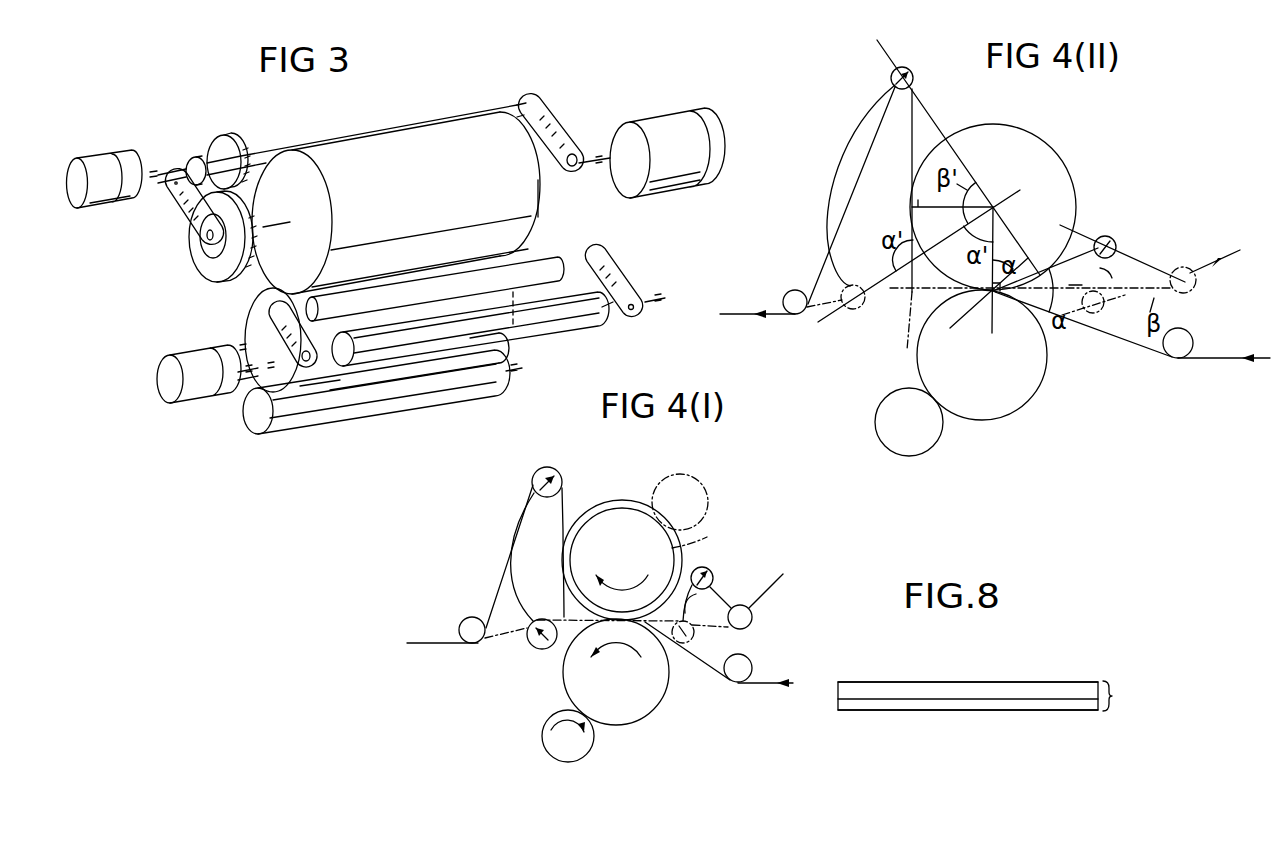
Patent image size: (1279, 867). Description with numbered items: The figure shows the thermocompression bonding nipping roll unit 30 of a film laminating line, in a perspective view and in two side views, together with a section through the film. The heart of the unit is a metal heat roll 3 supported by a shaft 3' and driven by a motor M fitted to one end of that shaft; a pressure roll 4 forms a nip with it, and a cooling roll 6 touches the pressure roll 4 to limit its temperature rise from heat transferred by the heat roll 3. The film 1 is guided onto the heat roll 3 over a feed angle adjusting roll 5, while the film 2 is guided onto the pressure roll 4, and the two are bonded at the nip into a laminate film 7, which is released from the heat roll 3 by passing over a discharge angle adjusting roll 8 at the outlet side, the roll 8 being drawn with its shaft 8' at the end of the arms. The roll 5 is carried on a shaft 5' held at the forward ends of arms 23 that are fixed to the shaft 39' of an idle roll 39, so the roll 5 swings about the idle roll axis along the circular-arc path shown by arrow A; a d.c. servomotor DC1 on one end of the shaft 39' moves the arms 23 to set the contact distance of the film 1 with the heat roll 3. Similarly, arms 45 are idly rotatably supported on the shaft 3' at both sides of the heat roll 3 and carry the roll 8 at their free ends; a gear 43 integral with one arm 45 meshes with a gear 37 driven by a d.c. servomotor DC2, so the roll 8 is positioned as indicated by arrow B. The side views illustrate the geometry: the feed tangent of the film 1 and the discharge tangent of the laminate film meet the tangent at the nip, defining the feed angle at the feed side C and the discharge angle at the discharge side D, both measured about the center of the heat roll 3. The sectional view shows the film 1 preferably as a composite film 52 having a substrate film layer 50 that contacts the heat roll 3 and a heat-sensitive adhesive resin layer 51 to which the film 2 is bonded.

In FIG. 4II, the film 1 is at (1144, 257).
In FIG. 4I, the film 1 is at (773, 587).
In FIG. 8, the film 1 is at (952, 712).
In FIG. 4II, the film 2 is at (1190, 361).
In FIG. 4I, the film 2 is at (763, 686).
In FIG. 3, the heat roll 3 is at (396, 191).
In FIG. 4II, the heat roll 3 is at (993, 221).
In FIG. 4I, the heat roll 3 is at (622, 533).
In FIG. 3, the shaft 3' is at (280, 242).
In FIG. 4II, the shaft 3' is at (929, 181).
In FIG. 3, the pressure roll 4 is at (252, 318).
In FIG. 4II, the pressure roll 4 is at (1017, 413).
In FIG. 4I, the pressure roll 4 is at (654, 710).
In FIG. 3, the feed angle adjusting roll 5 is at (472, 320).
In FIG. 4II, the feed angle adjusting roll 5 is at (1112, 227).
In FIG. 4I, the feed angle adjusting roll 5 is at (716, 595).
In FIG. 3, the shaft 5' is at (441, 274).
In FIG. 4II, the shaft 5' is at (1093, 256).
In FIG. 3, the cooling roll 6 is at (403, 398).
In FIG. 4II, the cooling roll 6 is at (909, 422).
In FIG. 4I, the cooling roll 6 is at (583, 746).
In FIG. 4II, the laminate film 7 is at (911, 186).
In FIG. 4I, the laminate film 7 is at (567, 508).
In FIG. 3, the discharge angle adjusting roll 8 is at (362, 140).
In FIG. 4II, the discharge angle adjusting roll 8 is at (862, 166).
In FIG. 4I, the discharge angle adjusting roll 8 is at (536, 530).
In FIG. 3, the guide roller shaft 8' is at (529, 92).
In FIG. 4II, the guide roller shaft 8' is at (937, 65).
In FIG. 3, the arms 23 is at (300, 388).
In FIG. 3, the thermocompression bonding nipping roll unit 30 is at (546, 218).
In FIG. 3, the gear 37 is at (217, 138).
In FIG. 4I, the gear 37 is at (710, 496).
In FIG. 3, the idle roll 39 is at (446, 365).
In FIG. 4I, the idle roll 39 is at (760, 627).
In FIG. 3, the shaft 39' is at (340, 416).
In FIG. 4II, the shaft 39' is at (1191, 253).
In FIG. 3, the gear 43 is at (202, 273).
In FIG. 4I, the gear 43 is at (707, 539).
In FIG. 3, the arms 45 is at (172, 197).
In FIG. 8, the substrate film layer 50 is at (1045, 682).
In FIG. 8, the heat-sensitive adhesive resin layer 51 is at (1042, 705).
In FIG. 8, the composite film 52 is at (1116, 696).
In FIG. 3, the d.c. servomotor DC1 is at (187, 398).
In FIG. 3, the d.c. servomotor DC2 is at (118, 200).
In FIG. 3, the motor M is at (673, 115).
In FIG. 4II, the arrow A is at (1115, 279).
In FIG. 4I, the arrow A is at (699, 609).
In FIG. 4II, the arrow B is at (827, 212).
In FIG. 4I, the arrow B is at (510, 578).
In FIG. 4II, the feed side C is at (1077, 273).
In FIG. 4II, the discharge side D is at (858, 245).